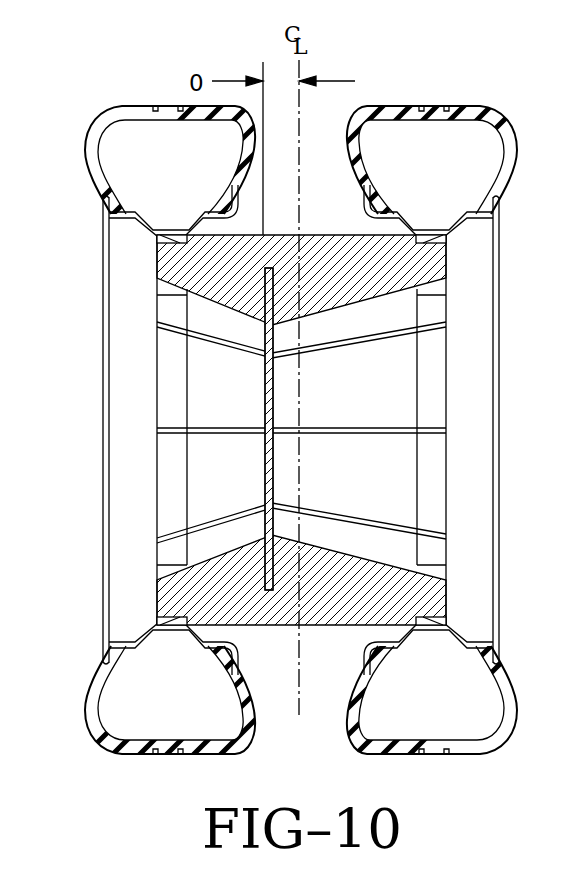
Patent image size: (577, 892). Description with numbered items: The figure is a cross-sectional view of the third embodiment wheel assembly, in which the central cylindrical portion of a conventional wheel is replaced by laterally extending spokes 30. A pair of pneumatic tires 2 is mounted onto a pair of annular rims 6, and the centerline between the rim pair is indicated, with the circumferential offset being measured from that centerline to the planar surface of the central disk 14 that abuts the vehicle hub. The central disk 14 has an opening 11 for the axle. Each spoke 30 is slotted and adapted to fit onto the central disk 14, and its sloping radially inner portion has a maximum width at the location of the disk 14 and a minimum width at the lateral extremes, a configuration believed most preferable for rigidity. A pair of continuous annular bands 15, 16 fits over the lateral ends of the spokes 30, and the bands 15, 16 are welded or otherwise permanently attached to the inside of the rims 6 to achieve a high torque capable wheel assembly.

The pneumatic tire 2 is at (96, 130).
The annular rim 6 is at (132, 604).
The opening 11 is at (274, 400).
The central disk 14 is at (265, 533).
The continuous annular band 15 is at (427, 240).
The continuous annular band 16 is at (162, 244).
The spoke 30 is at (352, 530).